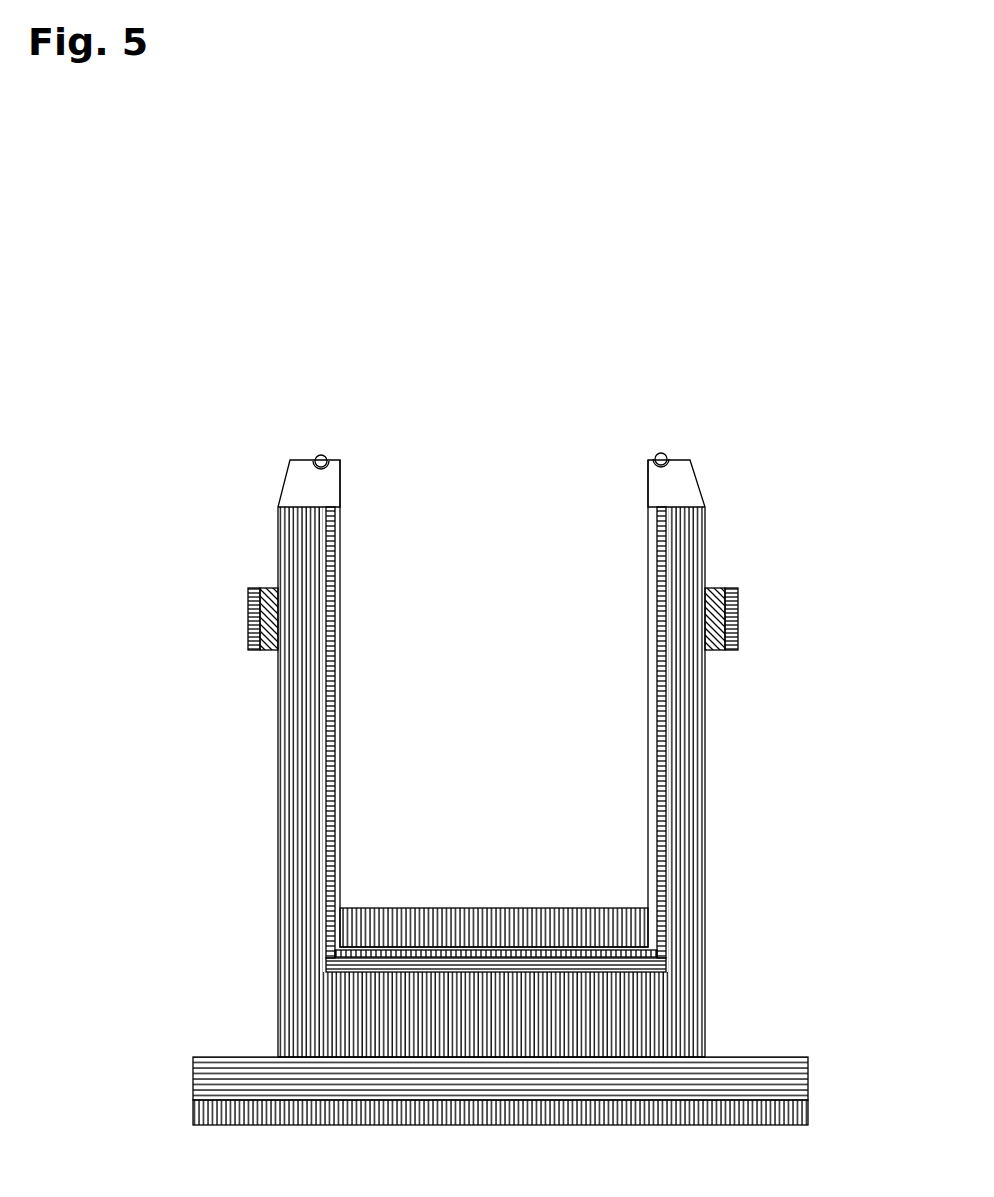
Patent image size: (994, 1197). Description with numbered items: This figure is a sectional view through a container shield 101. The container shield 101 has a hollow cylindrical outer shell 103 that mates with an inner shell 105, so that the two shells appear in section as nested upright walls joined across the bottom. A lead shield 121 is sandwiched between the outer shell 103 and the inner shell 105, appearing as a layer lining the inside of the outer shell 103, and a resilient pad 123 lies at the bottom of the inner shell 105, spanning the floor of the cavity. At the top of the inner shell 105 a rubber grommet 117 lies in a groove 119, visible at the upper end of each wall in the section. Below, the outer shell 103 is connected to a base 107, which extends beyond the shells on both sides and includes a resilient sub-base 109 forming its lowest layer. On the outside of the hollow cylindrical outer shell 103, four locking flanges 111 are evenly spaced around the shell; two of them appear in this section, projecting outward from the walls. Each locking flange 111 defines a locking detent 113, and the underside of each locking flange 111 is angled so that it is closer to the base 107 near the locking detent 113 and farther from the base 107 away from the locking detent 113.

The container shield 101 is at (725, 547).
The hollow cylindrical outer shell 103 is at (690, 724).
The inner shell 105 is at (340, 848).
The base 107 is at (780, 1068).
The resilient sub-base 109 is at (770, 1112).
The locking flange 111 is at (237, 637).
The locking detent 113 is at (255, 605).
The rubber grommet 117 is at (668, 452).
The groove 119 is at (648, 468).
The lead shield 121 is at (667, 807).
The resilient pad 123 is at (515, 908).